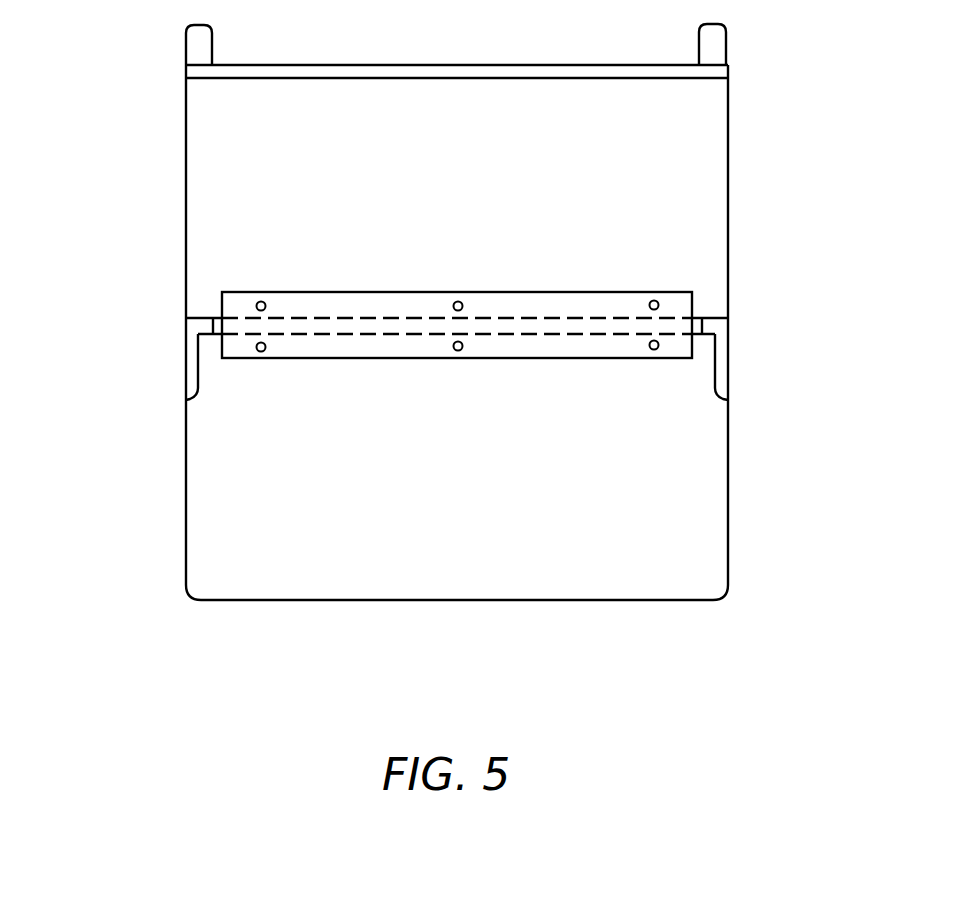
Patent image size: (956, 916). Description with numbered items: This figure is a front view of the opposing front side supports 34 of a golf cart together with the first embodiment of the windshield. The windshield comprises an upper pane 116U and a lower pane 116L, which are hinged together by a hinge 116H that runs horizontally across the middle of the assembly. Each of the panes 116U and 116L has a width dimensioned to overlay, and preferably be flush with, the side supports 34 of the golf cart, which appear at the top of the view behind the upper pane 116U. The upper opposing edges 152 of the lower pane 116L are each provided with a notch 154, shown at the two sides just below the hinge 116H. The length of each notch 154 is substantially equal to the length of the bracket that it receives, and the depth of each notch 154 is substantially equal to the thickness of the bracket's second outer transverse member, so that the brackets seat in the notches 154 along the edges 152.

The side supports 34 is at (212, 42).
The upper pane 116U is at (527, 181).
The lower pane 116L is at (527, 495).
The hinge 116H is at (393, 359).
The upper opposing edges 152 is at (186, 451).
The notch 154 is at (198, 380).